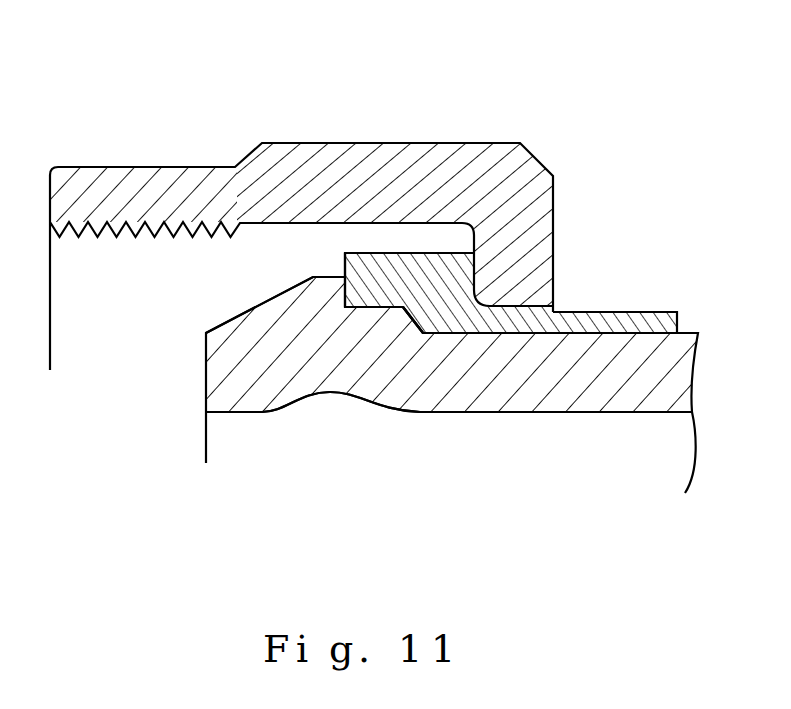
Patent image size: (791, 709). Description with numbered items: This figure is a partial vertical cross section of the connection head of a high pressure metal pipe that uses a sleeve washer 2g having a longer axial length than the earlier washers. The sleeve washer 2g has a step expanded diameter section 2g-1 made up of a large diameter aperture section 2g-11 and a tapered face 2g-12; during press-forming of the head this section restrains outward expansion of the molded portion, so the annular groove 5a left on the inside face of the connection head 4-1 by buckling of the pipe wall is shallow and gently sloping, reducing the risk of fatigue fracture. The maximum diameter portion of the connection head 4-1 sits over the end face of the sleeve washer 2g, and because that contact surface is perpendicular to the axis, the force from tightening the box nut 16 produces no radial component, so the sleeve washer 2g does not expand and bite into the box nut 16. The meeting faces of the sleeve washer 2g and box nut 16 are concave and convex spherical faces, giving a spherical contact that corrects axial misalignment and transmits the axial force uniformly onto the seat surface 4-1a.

The box nut 16 is at (283, 168).
The sleeve washer 2g is at (630, 312).
The step expanded diameter section 2g-1 is at (368, 250).
The large diameter aperture section 2g-11 is at (373, 308).
The tapered face 2g-12 is at (405, 312).
The connection head 4-1 is at (228, 367).
The seat surface 4-1a is at (253, 308).
The annular groove 5a is at (297, 400).